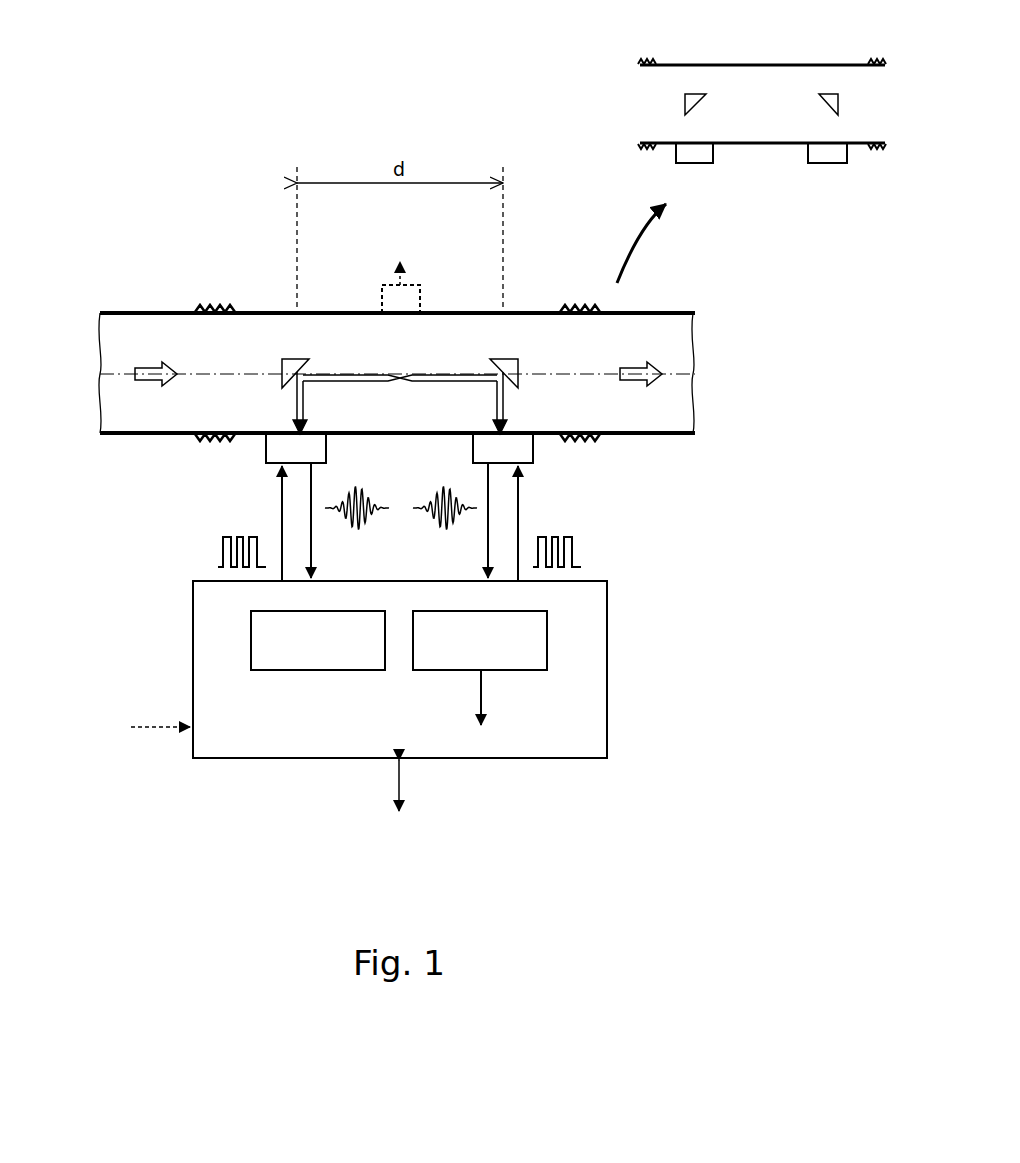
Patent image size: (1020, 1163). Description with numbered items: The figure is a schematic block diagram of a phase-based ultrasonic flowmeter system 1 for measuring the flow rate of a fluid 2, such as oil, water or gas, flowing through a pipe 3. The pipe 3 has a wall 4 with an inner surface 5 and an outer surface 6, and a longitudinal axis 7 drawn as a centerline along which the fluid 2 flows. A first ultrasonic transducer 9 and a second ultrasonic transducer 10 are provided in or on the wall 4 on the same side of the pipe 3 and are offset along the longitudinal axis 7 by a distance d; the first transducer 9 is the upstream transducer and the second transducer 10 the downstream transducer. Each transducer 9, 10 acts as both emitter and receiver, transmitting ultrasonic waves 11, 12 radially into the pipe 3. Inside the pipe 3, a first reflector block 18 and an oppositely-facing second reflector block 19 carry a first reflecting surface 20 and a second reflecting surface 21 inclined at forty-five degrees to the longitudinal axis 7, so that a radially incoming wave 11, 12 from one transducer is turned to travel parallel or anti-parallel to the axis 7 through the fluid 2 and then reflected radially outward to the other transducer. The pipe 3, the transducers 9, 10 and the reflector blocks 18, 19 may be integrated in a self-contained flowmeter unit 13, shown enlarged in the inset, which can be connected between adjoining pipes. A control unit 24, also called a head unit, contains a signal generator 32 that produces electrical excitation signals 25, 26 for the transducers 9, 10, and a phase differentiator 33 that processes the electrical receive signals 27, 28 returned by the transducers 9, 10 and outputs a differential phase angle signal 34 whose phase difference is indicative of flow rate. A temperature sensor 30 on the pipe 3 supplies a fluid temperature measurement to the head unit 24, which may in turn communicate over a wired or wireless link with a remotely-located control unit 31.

The phase-based ultrasonic flowmeter system 1 is at (92, 538).
The fluid 2 is at (157, 415).
The pipe 3 is at (266, 307).
The wall 4 is at (333, 310).
The inner surface 5 is at (533, 315).
The outer surface 6 is at (533, 311).
The longitudinal axis 7 is at (607, 368).
The first ultrasonic transducer 9 is at (266, 451).
The second ultrasonic transducer 10 is at (478, 451).
The ultrasonic wave 11 is at (297, 405).
The ultrasonic wave 12 is at (505, 405).
The flowmeter unit 13 is at (770, 36).
The first reflector block 18 is at (296, 364).
The second reflector block 19 is at (505, 364).
The first reflecting surface 20 is at (316, 366).
The second reflecting surface 21 is at (484, 366).
The control unit 24 is at (346, 716).
The electrical excitation signal 25 is at (280, 509).
The electrical excitation signal 26 is at (520, 509).
The electrical receive signal 27 is at (311, 551).
The electrical receive signal 28 is at (488, 551).
The temperature sensor 30 is at (382, 298).
The remotely-located control unit 31 is at (399, 838).
The signal generator 32 is at (251, 633).
The phase differentiator 33 is at (547, 639).
The differential phase angle signal 34 is at (481, 691).